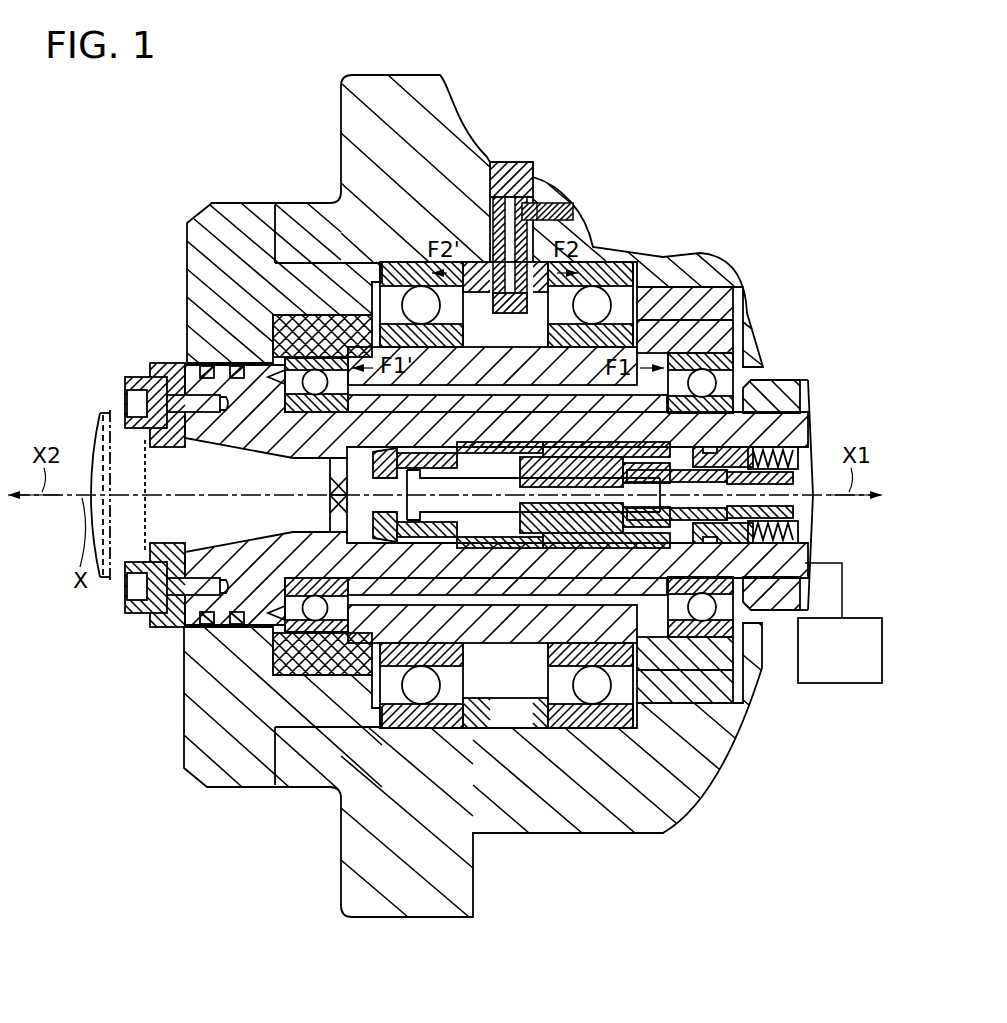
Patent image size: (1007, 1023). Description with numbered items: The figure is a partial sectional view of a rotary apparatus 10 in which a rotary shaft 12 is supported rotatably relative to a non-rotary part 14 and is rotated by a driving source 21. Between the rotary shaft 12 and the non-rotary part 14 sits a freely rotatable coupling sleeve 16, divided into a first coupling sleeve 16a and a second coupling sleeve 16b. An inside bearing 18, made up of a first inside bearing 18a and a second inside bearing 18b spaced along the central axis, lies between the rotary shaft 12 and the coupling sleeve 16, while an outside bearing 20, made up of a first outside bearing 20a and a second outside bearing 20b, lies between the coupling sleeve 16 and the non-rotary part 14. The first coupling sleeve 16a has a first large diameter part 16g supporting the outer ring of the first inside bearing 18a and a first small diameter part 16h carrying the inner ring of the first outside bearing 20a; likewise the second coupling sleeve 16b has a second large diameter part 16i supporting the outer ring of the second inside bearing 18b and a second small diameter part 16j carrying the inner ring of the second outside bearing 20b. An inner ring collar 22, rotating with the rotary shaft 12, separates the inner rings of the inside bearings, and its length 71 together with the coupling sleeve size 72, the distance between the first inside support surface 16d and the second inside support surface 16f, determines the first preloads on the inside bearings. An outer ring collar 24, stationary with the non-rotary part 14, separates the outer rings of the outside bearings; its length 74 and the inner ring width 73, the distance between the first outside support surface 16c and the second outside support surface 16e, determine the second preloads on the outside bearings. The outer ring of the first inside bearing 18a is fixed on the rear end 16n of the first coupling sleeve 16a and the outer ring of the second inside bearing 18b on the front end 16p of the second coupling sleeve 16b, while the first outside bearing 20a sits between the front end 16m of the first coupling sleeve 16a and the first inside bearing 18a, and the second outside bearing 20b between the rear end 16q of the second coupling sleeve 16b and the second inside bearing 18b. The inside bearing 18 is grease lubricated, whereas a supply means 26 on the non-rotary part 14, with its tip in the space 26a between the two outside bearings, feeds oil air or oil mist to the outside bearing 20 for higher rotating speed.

The rotary apparatus 10 is at (703, 185).
The rotary shaft 12 is at (166, 360).
The non-rotary part 14 is at (355, 108).
The coupling sleeve 16 is at (710, 310).
The first coupling sleeve 16a is at (690, 330).
The second coupling sleeve 16b is at (300, 300).
The first outside support surface 16c is at (667, 323).
The first inside support surface 16d is at (733, 318).
The second outside support surface 16e is at (335, 300).
The second inside support surface 16f is at (262, 240).
The first large diameter part 16g is at (705, 318).
The first small diameter part 16h is at (640, 320).
The second large diameter part 16i is at (320, 320).
The second small diameter part 16j is at (380, 245).
The front end of first coupling sleeve 16m is at (477, 390).
The rear end of first coupling sleeve 16n is at (740, 335).
The front end of second coupling sleeve 16p is at (268, 327).
The rear end of second coupling sleeve 16q is at (800, 397).
The inside bearing 18 is at (742, 362).
The first inside bearing 18a is at (745, 357).
The second inside bearing 18b is at (290, 360).
The outside bearing 20 is at (607, 242).
The first outside bearing 20a is at (575, 335).
The second outside bearing 20b is at (400, 330).
The driving source 21 is at (843, 685).
The inner ring collar 22 is at (470, 300).
The outer ring collar 24 is at (537, 275).
The supply means 26 is at (514, 158).
The space 26a is at (538, 172).
The length of inner ring collar 71 is at (663, 582).
The size of coupling sleeve 72 is at (350, 618).
The inner ring width 73 is at (380, 633).
The length of outer ring collar 74 is at (543, 700).